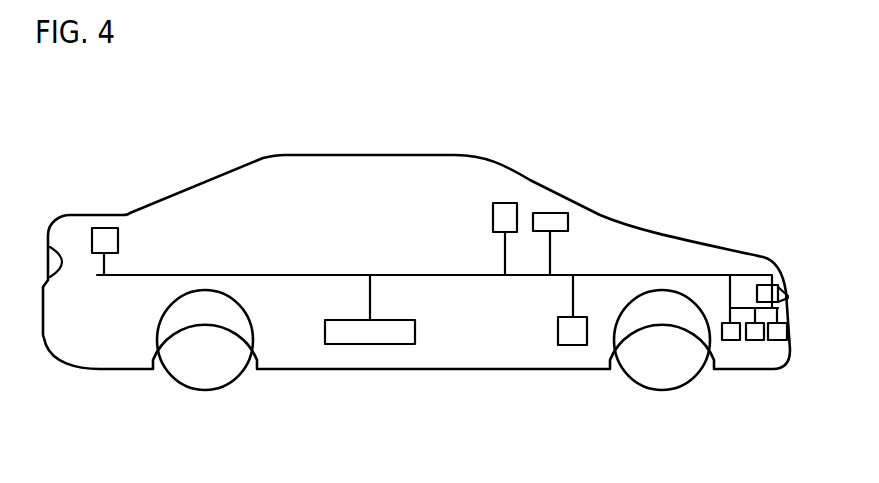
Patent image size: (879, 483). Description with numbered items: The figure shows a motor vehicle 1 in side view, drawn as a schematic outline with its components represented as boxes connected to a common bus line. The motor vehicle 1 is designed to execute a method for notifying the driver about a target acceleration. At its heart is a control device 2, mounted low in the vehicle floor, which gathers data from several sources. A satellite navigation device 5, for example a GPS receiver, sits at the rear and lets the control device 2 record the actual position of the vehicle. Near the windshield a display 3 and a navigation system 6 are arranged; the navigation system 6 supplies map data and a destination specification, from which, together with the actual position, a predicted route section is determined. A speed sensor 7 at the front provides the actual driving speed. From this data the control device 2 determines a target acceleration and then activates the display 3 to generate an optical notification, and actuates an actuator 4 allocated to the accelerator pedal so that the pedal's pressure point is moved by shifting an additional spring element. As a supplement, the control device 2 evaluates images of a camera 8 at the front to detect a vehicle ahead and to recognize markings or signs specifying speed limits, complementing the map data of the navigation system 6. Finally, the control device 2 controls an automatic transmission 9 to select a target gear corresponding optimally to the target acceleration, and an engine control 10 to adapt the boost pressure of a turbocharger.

The motor vehicle 1 is at (598, 187).
The control device 2 is at (362, 344).
The display 3 is at (504, 200).
The actuator 4 is at (568, 346).
The satellite navigation device 5 is at (105, 227).
The navigation system 6 is at (551, 212).
The speed sensor 7 is at (730, 342).
The camera 8 is at (768, 292).
The automatic transmission 9 is at (755, 342).
The engine control 10 is at (778, 342).